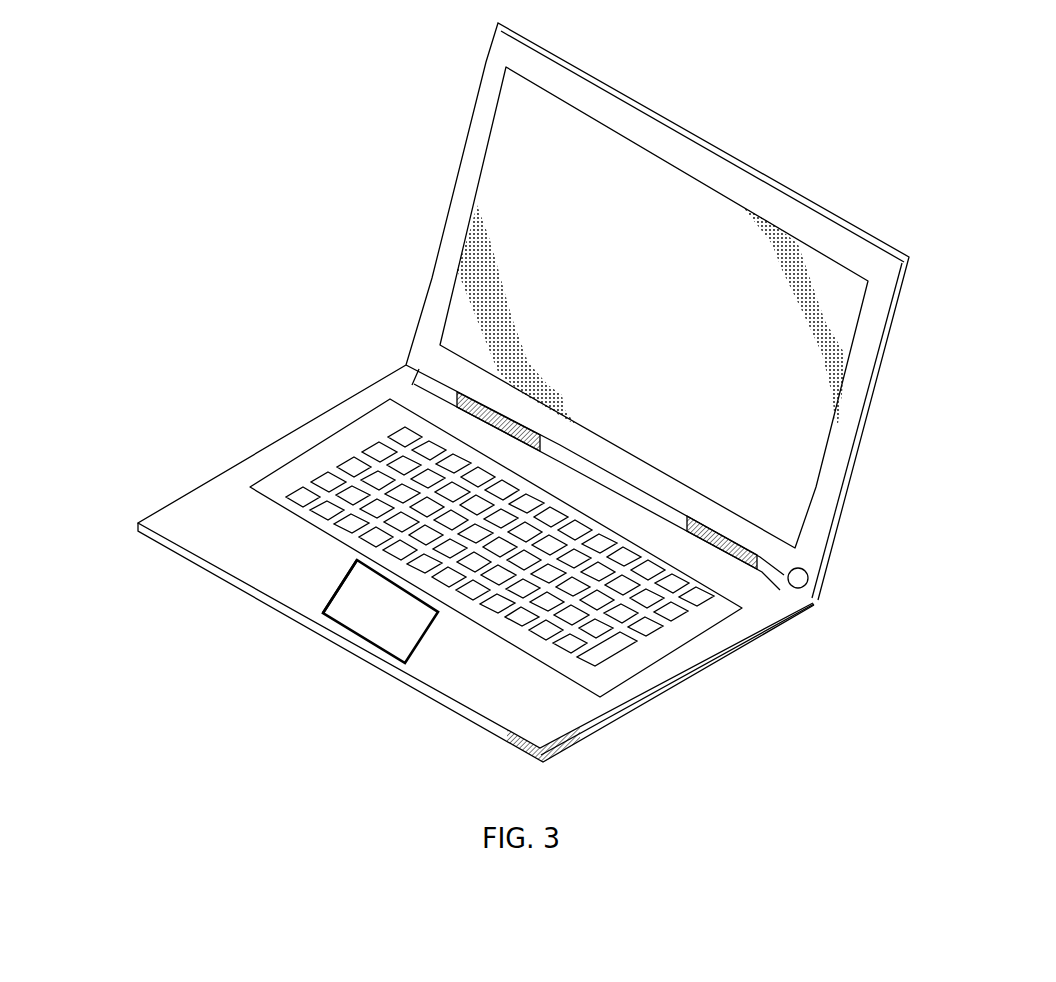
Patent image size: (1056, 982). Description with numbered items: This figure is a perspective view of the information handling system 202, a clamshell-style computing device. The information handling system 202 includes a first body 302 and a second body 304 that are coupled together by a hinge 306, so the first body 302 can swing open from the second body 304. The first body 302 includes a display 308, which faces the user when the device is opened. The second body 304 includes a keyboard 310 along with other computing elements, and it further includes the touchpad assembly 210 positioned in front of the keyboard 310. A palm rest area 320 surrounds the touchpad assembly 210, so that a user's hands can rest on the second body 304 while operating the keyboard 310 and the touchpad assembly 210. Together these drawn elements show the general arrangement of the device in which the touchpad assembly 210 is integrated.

The information handling system 202 is at (928, 59).
The first body 302 is at (852, 427).
The second body 304 is at (274, 450).
The hinge 306 is at (815, 589).
The display 308 is at (832, 222).
The keyboard 310 is at (712, 681).
The palm rest area 320 is at (324, 581).
The touchpad assembly 210 is at (332, 626).